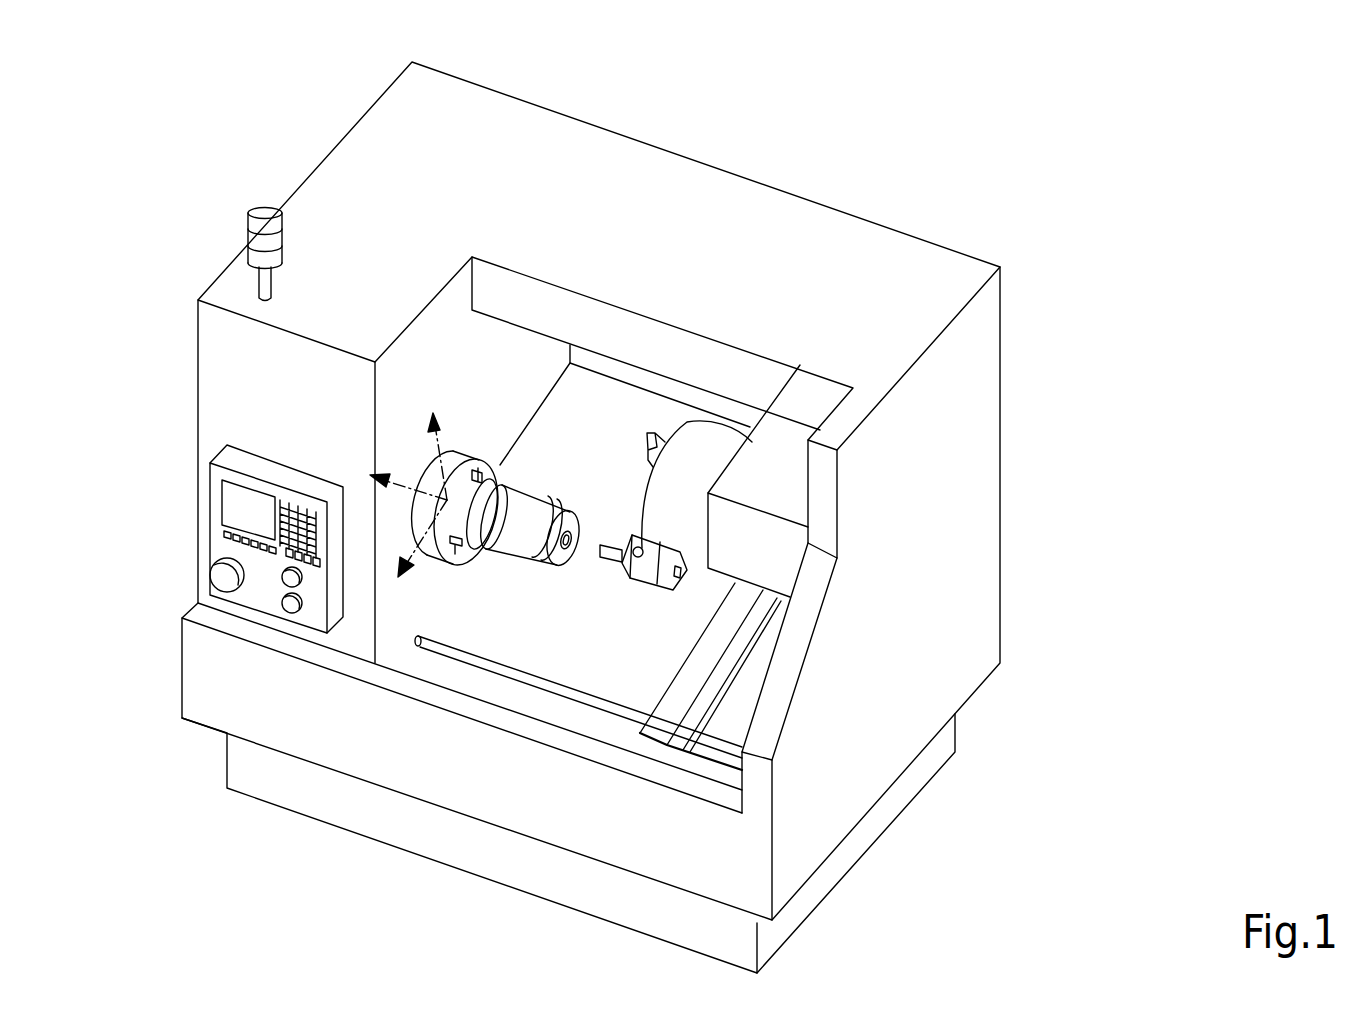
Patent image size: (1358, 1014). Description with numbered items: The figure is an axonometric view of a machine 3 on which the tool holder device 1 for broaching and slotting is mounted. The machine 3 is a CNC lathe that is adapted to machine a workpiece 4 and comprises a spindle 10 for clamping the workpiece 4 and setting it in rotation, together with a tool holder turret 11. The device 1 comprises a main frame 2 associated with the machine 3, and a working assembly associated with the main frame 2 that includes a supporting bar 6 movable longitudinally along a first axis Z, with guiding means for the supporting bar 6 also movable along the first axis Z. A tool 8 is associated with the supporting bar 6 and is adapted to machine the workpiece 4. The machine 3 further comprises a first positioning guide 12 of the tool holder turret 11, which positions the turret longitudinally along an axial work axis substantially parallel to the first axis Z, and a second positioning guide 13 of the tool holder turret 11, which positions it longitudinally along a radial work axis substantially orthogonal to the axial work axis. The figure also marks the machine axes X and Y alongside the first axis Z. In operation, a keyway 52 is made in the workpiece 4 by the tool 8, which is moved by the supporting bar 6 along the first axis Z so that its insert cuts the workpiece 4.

The tool holder device 1 is at (713, 540).
The main frame 2 is at (630, 577).
The machine 3 is at (330, 212).
The workpiece 4 is at (515, 518).
The supporting bar 6 is at (615, 558).
The tool 8 is at (575, 548).
The spindle 10 is at (458, 467).
The tool holder turret 11 is at (700, 457).
The first positioning guide 12 is at (645, 711).
The second positioning guide 13 is at (693, 710).
The keyway 52 is at (580, 530).
The X axis X is at (413, 553).
The Y axis Y is at (433, 437).
The first axis Z is at (398, 484).